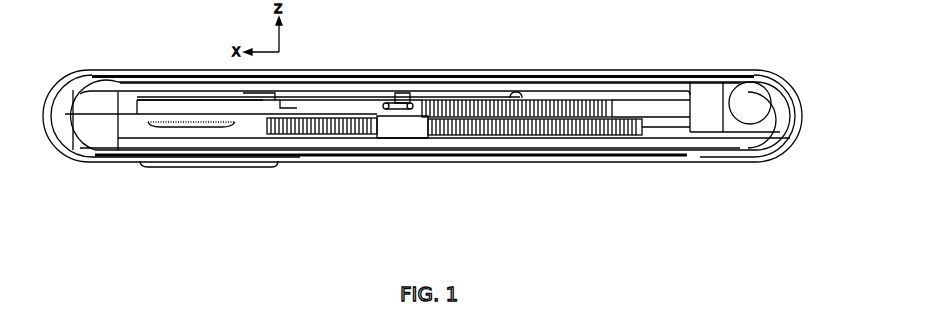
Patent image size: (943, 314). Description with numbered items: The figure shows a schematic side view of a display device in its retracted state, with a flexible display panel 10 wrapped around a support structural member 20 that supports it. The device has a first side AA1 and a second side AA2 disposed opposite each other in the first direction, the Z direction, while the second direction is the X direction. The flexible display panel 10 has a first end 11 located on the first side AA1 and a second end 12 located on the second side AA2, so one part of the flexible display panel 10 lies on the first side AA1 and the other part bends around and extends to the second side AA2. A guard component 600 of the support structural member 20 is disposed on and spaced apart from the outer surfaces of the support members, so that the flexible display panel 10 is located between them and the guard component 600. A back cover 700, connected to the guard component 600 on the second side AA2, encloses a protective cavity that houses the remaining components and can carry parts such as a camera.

The flexible display panel 10 is at (772, 103).
The first end 11 is at (86, 72).
The second end 12 is at (432, 150).
The support structural member 20 is at (420, 68).
The guard component 600 is at (572, 68).
The back cover 700 is at (377, 159).
The first side AA1 is at (497, 64).
The second side AA2 is at (540, 172).